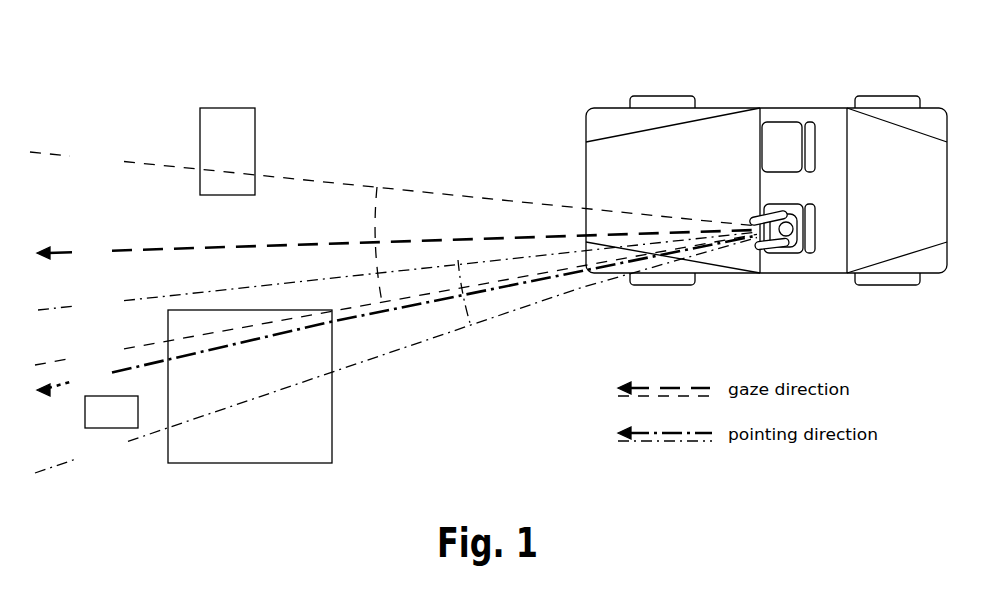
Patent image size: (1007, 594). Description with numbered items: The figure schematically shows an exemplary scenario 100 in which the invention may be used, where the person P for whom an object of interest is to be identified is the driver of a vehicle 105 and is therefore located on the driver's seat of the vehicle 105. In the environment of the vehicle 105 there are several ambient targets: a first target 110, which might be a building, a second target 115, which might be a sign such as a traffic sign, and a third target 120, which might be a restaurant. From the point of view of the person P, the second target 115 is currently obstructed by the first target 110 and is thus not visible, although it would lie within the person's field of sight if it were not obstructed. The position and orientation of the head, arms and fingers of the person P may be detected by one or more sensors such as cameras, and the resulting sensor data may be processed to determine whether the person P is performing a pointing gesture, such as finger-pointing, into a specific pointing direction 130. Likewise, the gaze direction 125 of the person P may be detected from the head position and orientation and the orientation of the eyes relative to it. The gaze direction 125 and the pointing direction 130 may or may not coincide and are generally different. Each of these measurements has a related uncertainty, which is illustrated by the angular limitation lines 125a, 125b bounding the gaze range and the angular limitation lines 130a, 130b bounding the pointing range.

The exemplary scenario 100 is at (878, 44).
The vehicle 105 is at (617, 107).
The first target 110 is at (287, 453).
The second target 115 is at (95, 422).
The third target 120 is at (245, 162).
The gaze direction 125 is at (397, 244).
The angular limit of gaze range 125a is at (393, 187).
The angular limit of gaze range 125b is at (396, 299).
The pointing direction 130 is at (397, 316).
The angular limit of pointing range 130a is at (397, 273).
The angular limit of pointing range 130b is at (396, 356).
The person P is at (792, 253).